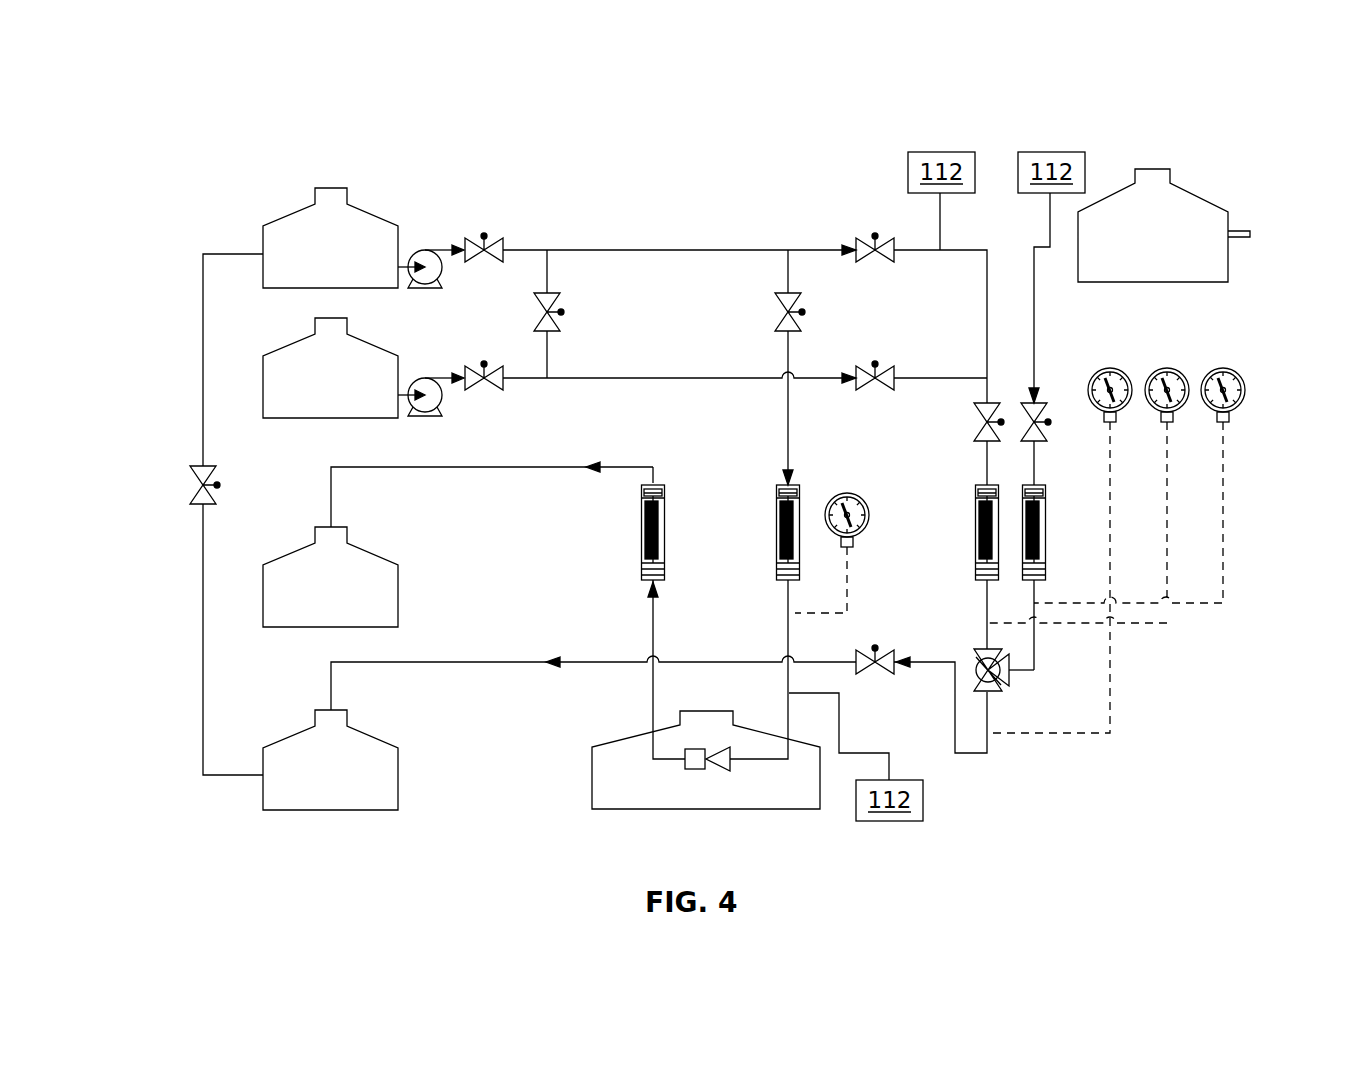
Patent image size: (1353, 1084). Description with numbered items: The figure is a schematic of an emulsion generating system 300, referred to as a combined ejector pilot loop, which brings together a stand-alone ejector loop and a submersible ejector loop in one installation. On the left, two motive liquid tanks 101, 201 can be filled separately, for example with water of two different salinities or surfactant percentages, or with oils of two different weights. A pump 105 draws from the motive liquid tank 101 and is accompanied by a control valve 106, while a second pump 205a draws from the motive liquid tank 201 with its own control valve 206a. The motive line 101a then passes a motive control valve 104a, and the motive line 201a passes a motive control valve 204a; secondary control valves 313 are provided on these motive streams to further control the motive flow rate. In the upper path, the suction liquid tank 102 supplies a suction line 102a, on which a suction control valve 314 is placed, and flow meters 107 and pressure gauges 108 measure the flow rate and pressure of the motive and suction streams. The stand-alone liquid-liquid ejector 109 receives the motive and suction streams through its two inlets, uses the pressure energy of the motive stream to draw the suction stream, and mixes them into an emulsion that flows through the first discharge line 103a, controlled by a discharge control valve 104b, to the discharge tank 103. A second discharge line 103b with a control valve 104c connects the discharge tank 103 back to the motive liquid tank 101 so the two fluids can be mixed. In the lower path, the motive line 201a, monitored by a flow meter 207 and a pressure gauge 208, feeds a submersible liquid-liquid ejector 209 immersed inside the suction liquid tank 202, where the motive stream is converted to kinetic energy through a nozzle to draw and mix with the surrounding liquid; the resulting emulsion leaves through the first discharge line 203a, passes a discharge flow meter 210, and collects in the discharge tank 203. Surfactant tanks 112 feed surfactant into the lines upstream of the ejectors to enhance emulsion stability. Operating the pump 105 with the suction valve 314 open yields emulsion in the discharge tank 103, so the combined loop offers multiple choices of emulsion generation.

The emulsion generating system 300 is at (316, 110).
The motive liquid tank 101 is at (353, 252).
The motive liquid tank 201 is at (353, 382).
The discharge tank 203 is at (353, 591).
The discharge tank 103 is at (353, 774).
The suction liquid tank 102 is at (1174, 248).
The suction liquid tank 202 is at (646, 790).
The pump 105 is at (438, 290).
The pump 205a is at (444, 403).
The control valve 106 is at (466, 244).
The control valve 206a is at (498, 367).
The motive control valve 104a is at (854, 245).
The motive control valve 204a is at (895, 375).
The discharge control valve 104b is at (896, 669).
The control valve 104c is at (196, 492).
The secondary control valve 313 is at (553, 293).
The suction control valve 314 is at (1040, 444).
The stand-alone liquid-liquid ejector 109 is at (995, 695).
The motive line 101a is at (672, 248).
The motive line 201a is at (673, 376).
The first discharge line 203a is at (488, 470).
The first discharge line 103a is at (488, 667).
The second discharge line 103b is at (201, 616).
The suction line 102a is at (1038, 290).
The discharge flow meter 210 is at (641, 518).
The flow meter 207 is at (776, 518).
The flow meter 107 is at (975, 518).
The pressure gauge 208 is at (845, 492).
The pressure gauge 108 is at (1223, 367).
The surfactant tank 112 is at (970, 486).
The submersible liquid-liquid ejector 209 is at (697, 770).